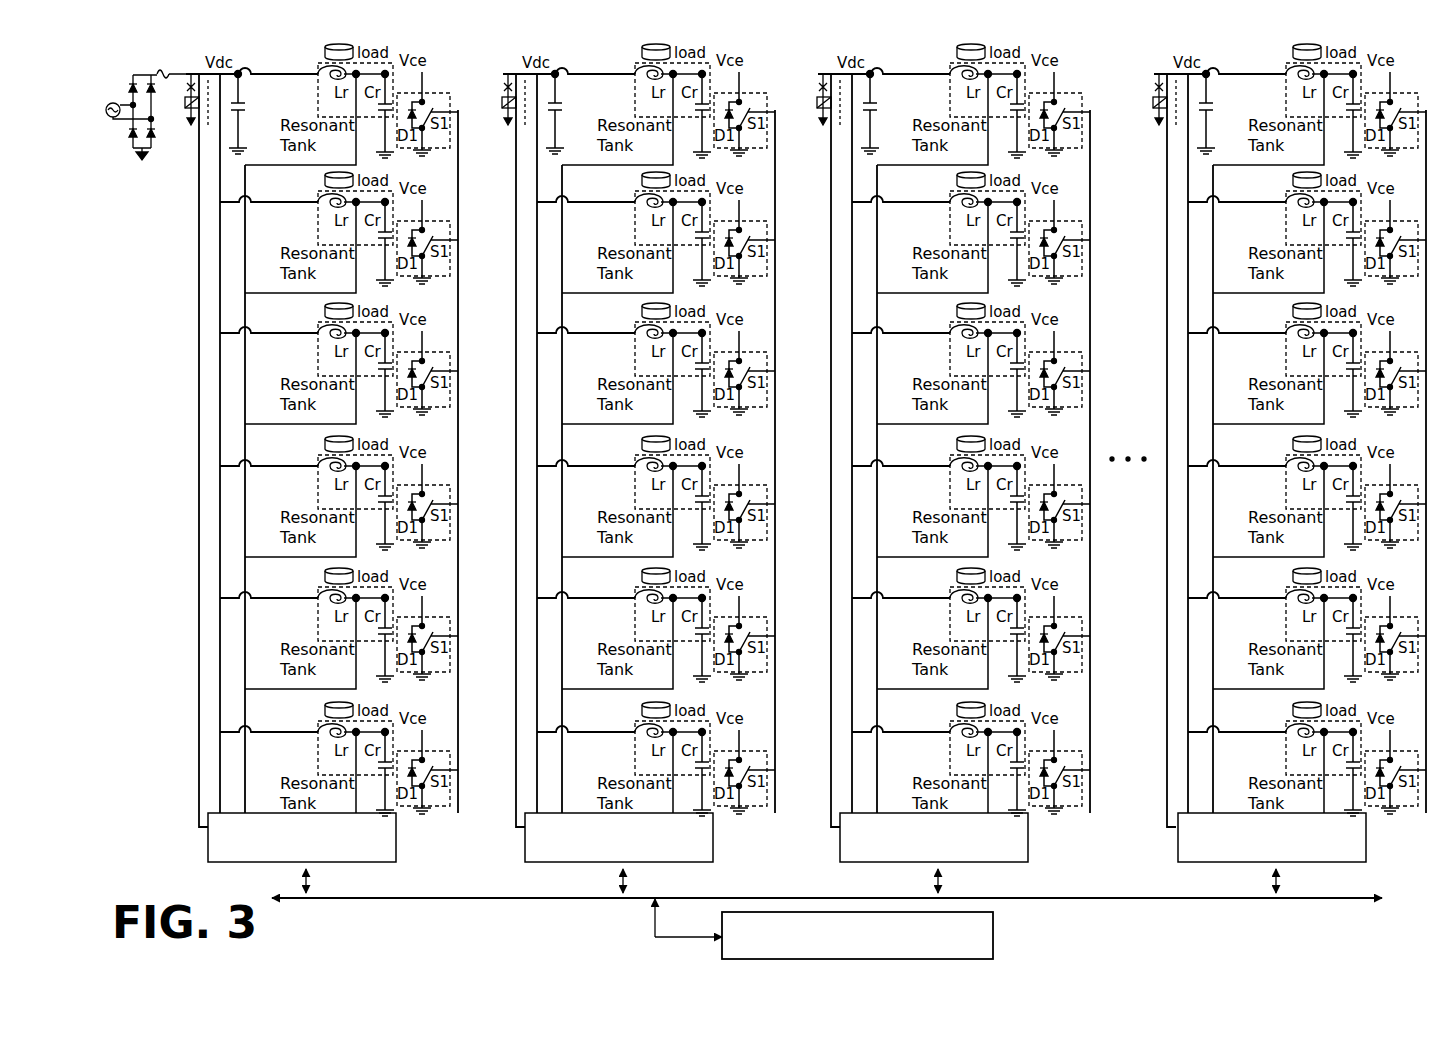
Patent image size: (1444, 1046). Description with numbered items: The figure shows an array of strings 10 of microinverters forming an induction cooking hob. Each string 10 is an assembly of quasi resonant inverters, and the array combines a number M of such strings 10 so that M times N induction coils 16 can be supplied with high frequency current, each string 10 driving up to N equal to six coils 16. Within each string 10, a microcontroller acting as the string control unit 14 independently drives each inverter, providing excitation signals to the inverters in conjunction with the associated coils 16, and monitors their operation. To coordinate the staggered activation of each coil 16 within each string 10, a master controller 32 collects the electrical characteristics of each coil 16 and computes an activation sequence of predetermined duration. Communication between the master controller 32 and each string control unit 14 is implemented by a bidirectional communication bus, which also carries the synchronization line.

The string 10 is at (766, 435).
The microcontroller 14 is at (396, 843).
The induction coil 16 is at (966, 209).
The master controller 32 is at (993, 938).